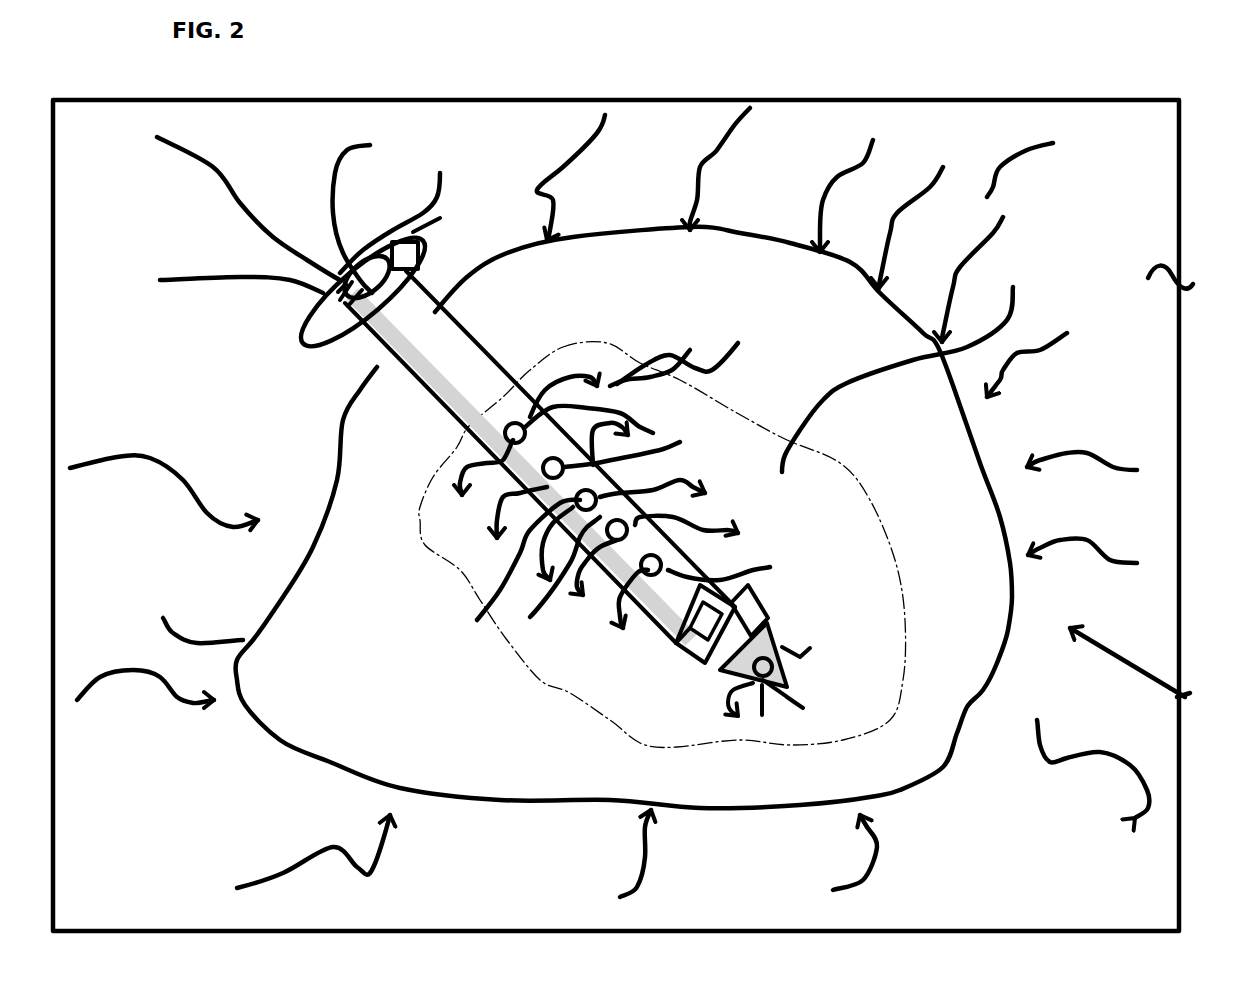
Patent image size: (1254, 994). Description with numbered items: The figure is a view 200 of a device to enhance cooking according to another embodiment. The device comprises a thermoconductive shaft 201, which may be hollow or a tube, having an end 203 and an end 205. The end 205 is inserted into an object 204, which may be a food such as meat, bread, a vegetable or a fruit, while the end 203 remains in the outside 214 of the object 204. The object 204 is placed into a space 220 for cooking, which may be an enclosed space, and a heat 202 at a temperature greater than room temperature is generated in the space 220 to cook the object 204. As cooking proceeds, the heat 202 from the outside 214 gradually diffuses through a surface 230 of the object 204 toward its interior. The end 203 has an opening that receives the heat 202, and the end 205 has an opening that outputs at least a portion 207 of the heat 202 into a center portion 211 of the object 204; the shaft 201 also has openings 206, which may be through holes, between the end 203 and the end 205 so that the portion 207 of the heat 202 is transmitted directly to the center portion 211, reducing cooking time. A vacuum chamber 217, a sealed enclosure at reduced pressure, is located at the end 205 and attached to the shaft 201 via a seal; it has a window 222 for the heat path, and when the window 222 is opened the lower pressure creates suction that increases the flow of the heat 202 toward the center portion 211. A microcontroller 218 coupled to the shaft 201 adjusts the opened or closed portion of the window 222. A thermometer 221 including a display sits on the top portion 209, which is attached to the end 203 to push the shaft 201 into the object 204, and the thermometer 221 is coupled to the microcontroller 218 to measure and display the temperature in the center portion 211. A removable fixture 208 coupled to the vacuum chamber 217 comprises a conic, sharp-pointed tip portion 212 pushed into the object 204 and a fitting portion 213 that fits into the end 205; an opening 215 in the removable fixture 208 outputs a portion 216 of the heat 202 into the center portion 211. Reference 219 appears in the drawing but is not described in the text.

The view 200 is at (616, 515).
The shaft 201 is at (440, 397).
The heat 202 is at (363, 246).
The end 203 is at (537, 381).
The object 204 is at (675, 545).
The end 205 is at (743, 610).
The openings 206 is at (590, 523).
The portion of the heat 207 is at (628, 472).
The removable fixture 208 is at (774, 668).
The top portion 209 is at (423, 256).
The center portion 211 is at (917, 366).
The tip portion 212 is at (775, 712).
The fitting portion 213 is at (782, 634).
The outside 214 is at (630, 502).
The opening 215 is at (801, 702).
The portion of the heat 216 is at (732, 711).
The vacuum chamber 217 is at (733, 605).
The microcontroller 218 is at (677, 643).
The lead wire 219 is at (738, 567).
The space 220 is at (1187, 290).
The thermometer 221 is at (443, 212).
The window 222 is at (615, 645).
The surface 230 is at (188, 619).